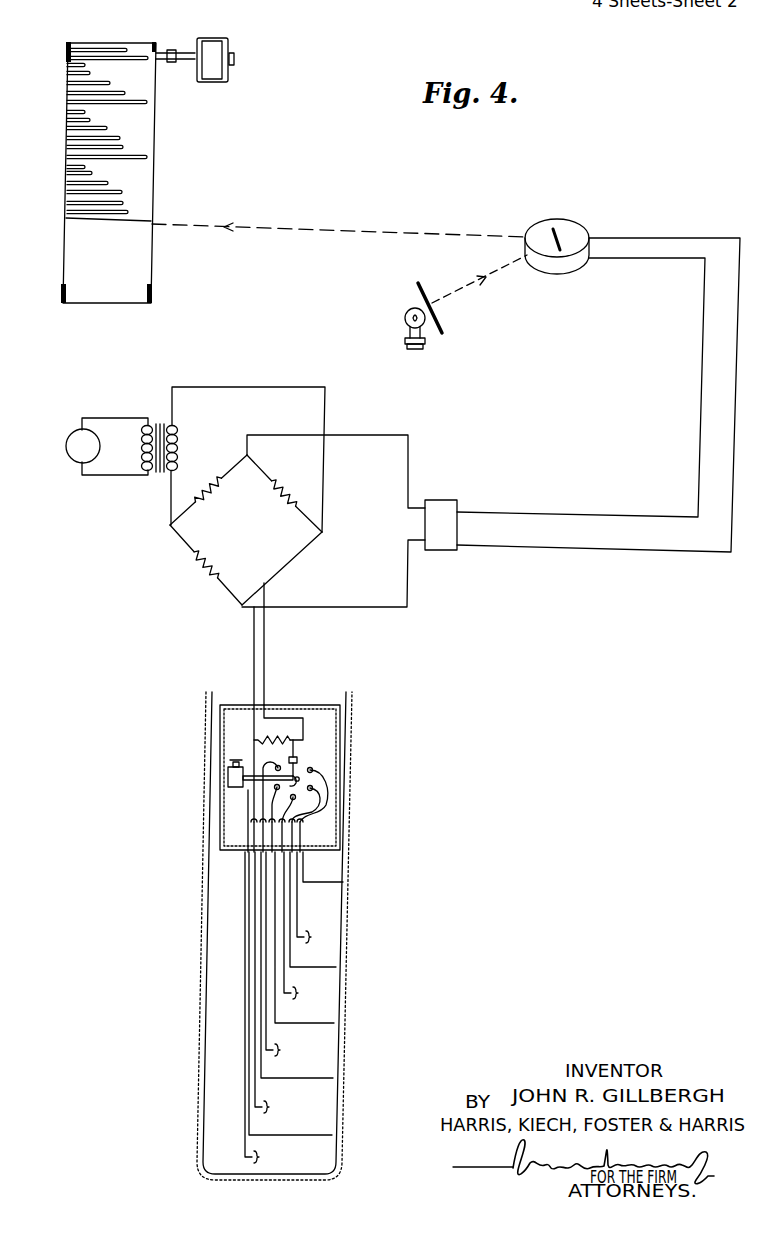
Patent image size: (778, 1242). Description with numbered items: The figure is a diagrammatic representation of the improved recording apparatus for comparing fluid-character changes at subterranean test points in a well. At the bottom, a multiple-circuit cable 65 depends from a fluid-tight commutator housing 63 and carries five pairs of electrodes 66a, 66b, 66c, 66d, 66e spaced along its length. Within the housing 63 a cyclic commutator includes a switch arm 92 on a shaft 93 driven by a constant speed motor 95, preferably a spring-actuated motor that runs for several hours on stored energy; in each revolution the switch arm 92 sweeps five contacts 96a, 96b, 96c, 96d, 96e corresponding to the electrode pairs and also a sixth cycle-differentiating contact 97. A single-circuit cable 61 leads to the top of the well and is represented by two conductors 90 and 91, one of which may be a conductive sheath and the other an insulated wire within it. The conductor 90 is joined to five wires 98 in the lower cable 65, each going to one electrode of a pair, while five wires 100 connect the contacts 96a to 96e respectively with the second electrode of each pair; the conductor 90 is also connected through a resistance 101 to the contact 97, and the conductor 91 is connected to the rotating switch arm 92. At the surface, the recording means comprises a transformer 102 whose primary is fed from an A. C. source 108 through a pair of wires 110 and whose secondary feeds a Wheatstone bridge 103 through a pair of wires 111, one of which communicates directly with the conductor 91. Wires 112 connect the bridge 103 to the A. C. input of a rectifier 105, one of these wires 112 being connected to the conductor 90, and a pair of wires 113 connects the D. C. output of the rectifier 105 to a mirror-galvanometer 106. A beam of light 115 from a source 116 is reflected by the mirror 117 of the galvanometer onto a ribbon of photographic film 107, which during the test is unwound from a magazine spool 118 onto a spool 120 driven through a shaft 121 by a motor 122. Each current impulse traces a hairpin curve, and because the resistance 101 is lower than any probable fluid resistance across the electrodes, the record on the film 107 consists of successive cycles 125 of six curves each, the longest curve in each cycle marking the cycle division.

The single-circuit cable 61 is at (278, 645).
The commutator housing 63 is at (221, 834).
The multiple-circuit cable 65 is at (238, 921).
The pair of electrodes 66a is at (269, 1011).
The pair of electrodes 66b is at (282, 986).
The pair of electrodes 66c is at (295, 958).
The pair of electrodes 66d is at (309, 930).
The pair of electrodes 66e is at (324, 902).
The conductor 90 is at (252, 636).
The conductor 91 is at (266, 673).
The switch arm 92 is at (301, 772).
The shaft 93 is at (262, 781).
The constant speed motor 95 is at (230, 767).
The contact 96a is at (276, 766).
The contact 96b is at (275, 789).
The contact 96c is at (296, 799).
The contact 96d is at (313, 788).
The contact 96e is at (313, 771).
The cycle-differentiating contact 97 is at (299, 759).
The wires 98 is at (300, 902).
The wires 100 is at (343, 882).
The resistance 101 is at (258, 738).
The transformer 102 is at (161, 423).
The Wheatstone bridge 103 is at (185, 558).
The rectifier 105 is at (455, 551).
The mirror-galvanometer 106 is at (586, 287).
The ribbon of photographic film 107 is at (151, 190).
The A. C. source 108 is at (66, 447).
The wires 110 is at (100, 418).
The wires 111 is at (236, 387).
The wires 112 is at (410, 452).
The wires 113 is at (576, 512).
The beam of light 115 is at (398, 230).
The light source 116 is at (404, 315).
The mirror 117 is at (562, 232).
The magazine spool 118 is at (152, 291).
The spool 120 is at (161, 43).
The shaft 121 is at (179, 63).
The motor 122 is at (234, 44).
The cycles 125 is at (66, 50).